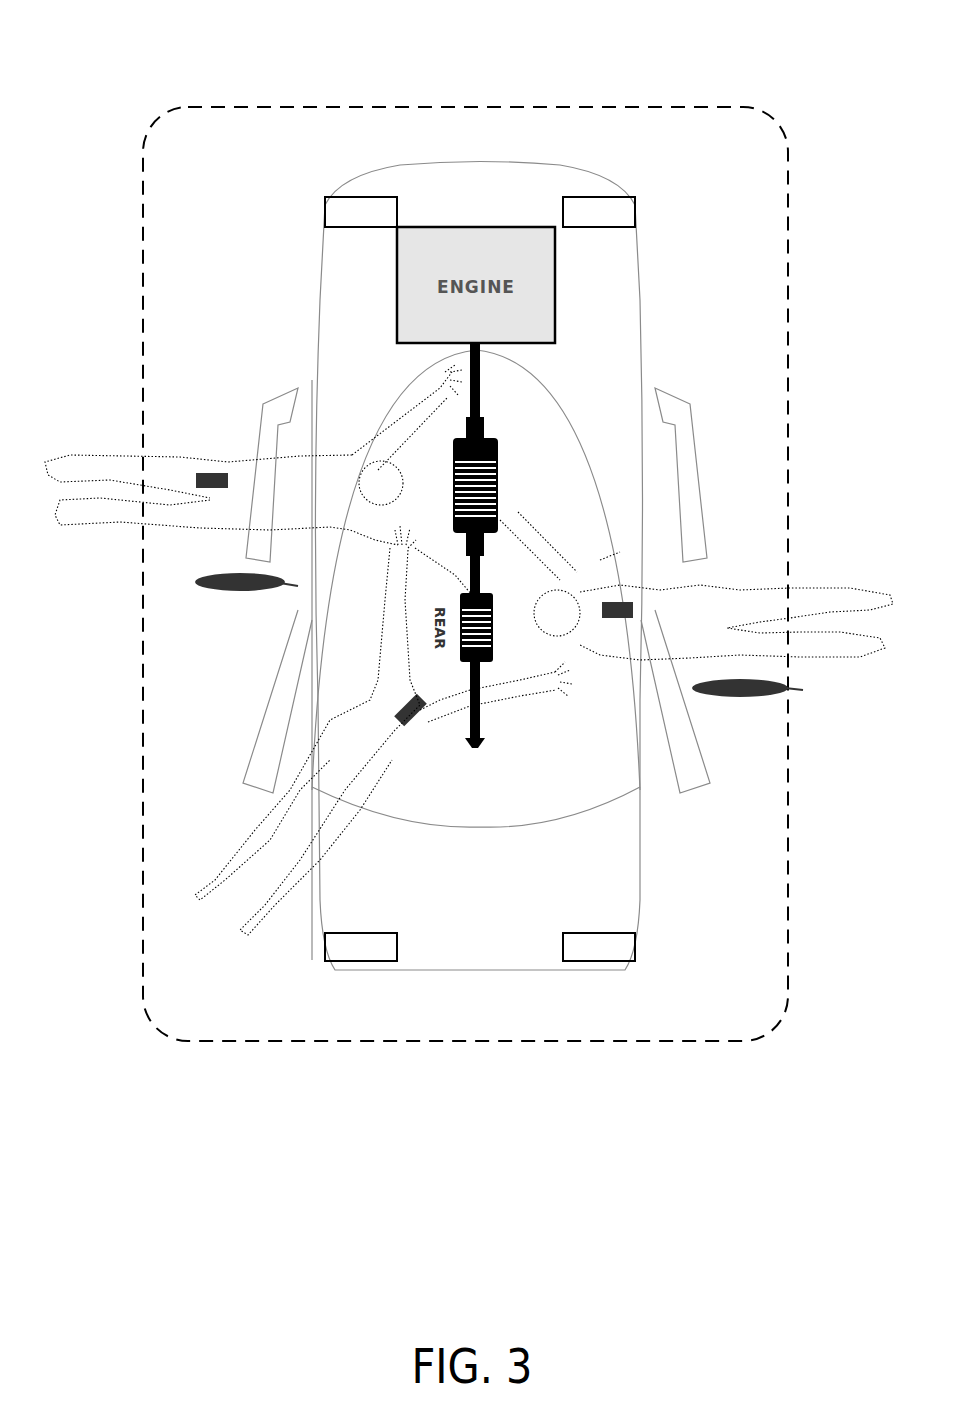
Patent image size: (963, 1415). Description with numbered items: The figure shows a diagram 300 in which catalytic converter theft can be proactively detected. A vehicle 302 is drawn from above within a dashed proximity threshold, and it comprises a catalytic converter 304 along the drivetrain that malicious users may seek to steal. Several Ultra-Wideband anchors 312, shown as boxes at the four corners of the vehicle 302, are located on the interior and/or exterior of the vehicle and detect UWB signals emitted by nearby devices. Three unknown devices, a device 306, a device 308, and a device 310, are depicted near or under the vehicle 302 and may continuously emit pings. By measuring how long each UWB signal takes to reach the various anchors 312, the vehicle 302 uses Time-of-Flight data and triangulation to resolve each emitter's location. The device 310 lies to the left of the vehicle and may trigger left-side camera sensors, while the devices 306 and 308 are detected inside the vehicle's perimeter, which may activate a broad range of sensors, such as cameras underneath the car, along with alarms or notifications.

The diagram 300 is at (162, 46).
The vehicle 302 is at (637, 298).
The catalytic converter 304 is at (498, 462).
The device 306 is at (622, 600).
The device 308 is at (414, 722).
The device 310 is at (206, 473).
The UWB anchors 312 is at (480, 579).